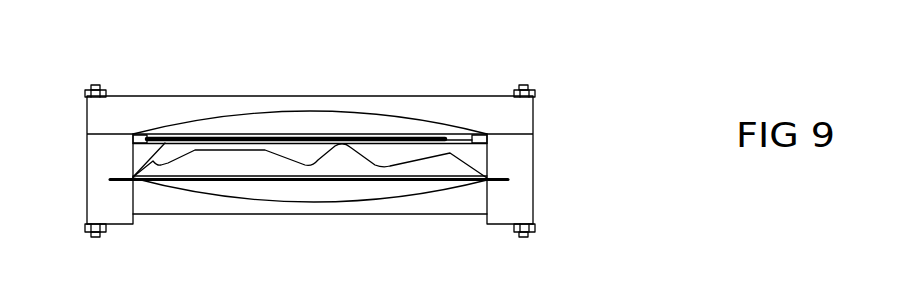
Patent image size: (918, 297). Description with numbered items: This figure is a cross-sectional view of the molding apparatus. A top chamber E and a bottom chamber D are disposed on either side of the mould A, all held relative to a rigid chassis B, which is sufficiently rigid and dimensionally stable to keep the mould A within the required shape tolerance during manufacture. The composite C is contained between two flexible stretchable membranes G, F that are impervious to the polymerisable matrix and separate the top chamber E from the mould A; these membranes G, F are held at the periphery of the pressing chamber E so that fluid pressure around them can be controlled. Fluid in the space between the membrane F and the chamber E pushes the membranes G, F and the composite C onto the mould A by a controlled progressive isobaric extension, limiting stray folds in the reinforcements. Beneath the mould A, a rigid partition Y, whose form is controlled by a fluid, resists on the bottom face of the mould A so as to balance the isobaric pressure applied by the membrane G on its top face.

The flexible stretchable membrane F is at (123, 110).
The flexible stretchable membrane G is at (133, 166).
The rigid chassis B is at (112, 202).
The bottom chamber D is at (207, 203).
The top chamber E is at (508, 105).
The composite C is at (480, 133).
The mould A is at (440, 165).
The rigid partition Y is at (420, 178).